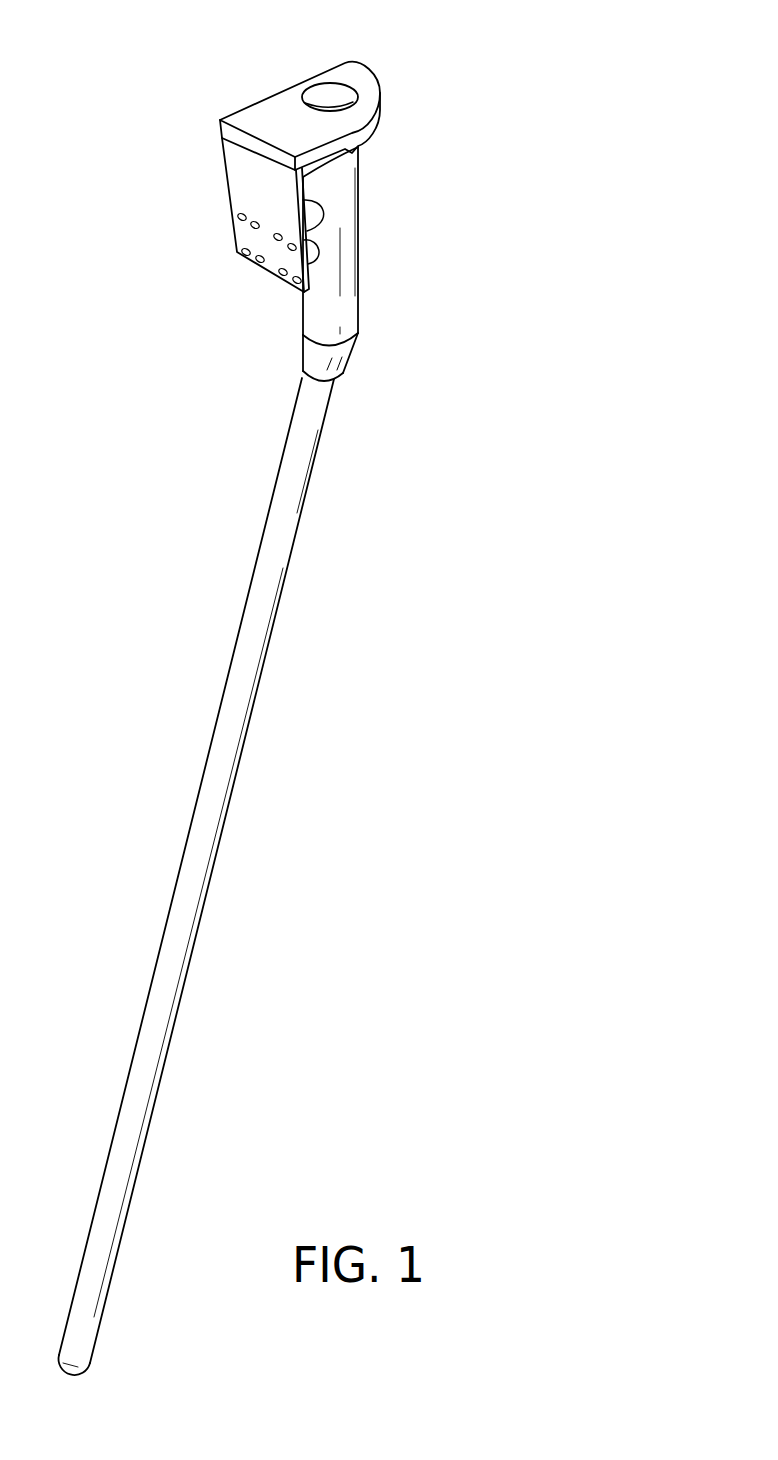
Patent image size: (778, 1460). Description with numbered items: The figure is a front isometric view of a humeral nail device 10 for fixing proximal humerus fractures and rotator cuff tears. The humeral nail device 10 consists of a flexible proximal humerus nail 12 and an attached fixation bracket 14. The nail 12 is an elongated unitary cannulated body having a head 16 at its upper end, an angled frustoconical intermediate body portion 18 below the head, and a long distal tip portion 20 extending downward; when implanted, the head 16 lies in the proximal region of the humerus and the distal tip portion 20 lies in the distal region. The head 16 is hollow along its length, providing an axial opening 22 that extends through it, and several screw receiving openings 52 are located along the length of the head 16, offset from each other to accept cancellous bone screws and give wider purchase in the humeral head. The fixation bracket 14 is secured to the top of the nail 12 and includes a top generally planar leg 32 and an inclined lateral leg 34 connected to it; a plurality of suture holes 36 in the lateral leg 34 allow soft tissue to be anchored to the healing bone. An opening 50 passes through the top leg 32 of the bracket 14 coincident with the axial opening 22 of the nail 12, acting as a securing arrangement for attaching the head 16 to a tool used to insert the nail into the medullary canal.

The humeral nail device 10 is at (312, 697).
The flexible proximal humerus nail 12 is at (292, 547).
The fixation bracket 14 is at (266, 82).
The head 16 is at (342, 315).
The angled frustoconical intermediate body portion 18 is at (315, 358).
The distal tip portion 20 is at (165, 977).
The axial opening 22 is at (328, 92).
The top generally planar leg 32 is at (248, 117).
The inclined lateral leg 34 is at (227, 175).
The suture holes 36 is at (240, 248).
The opening 50 is at (338, 108).
The screw receiving openings 52 is at (325, 212).